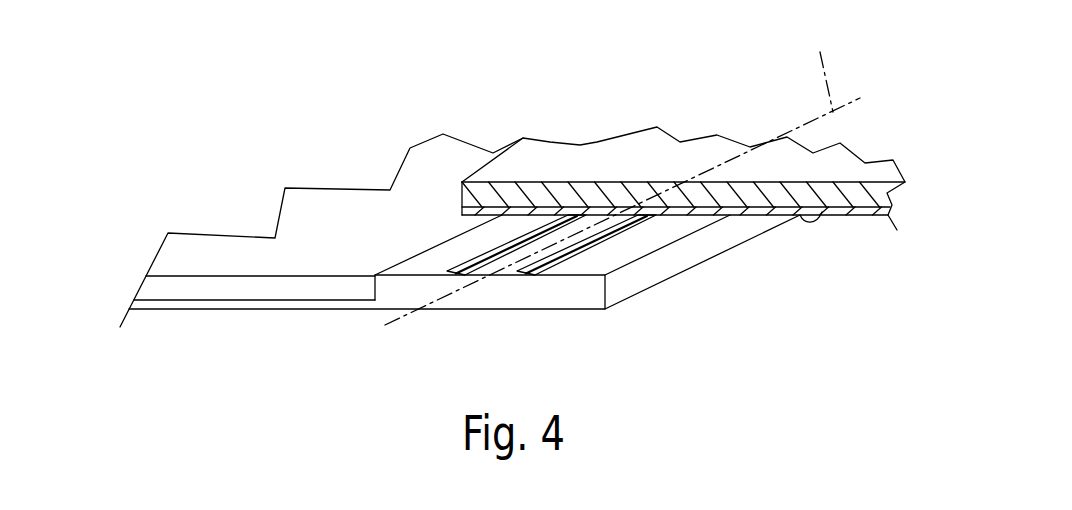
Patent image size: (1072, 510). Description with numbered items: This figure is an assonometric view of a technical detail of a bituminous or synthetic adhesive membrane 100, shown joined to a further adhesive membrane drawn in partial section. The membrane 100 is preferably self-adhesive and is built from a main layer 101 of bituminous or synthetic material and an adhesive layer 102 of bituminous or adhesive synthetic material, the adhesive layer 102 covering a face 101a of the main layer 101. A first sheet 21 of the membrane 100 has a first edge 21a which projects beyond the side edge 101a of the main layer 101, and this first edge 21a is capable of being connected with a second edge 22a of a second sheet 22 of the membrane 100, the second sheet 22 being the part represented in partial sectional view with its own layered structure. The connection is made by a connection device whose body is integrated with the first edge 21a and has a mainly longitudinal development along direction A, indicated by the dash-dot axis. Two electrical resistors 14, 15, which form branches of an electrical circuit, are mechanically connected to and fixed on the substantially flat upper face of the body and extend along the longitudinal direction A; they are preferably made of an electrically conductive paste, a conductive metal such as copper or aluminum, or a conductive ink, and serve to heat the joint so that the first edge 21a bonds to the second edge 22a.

The bituminous or synthetic adhesive membrane 100 is at (475, 173).
The main layer 101 is at (880, 187).
The face of the main layer 101a is at (822, 212).
The adhesive layer 102 is at (870, 215).
The electrical resistor 14 is at (463, 268).
The electrical resistor 15 is at (530, 273).
The first sheet 21 is at (475, 304).
The first edge 21a is at (567, 303).
The second sheet 22 is at (642, 150).
The second edge 22a is at (562, 226).
The longitudinal direction A is at (622, 175).